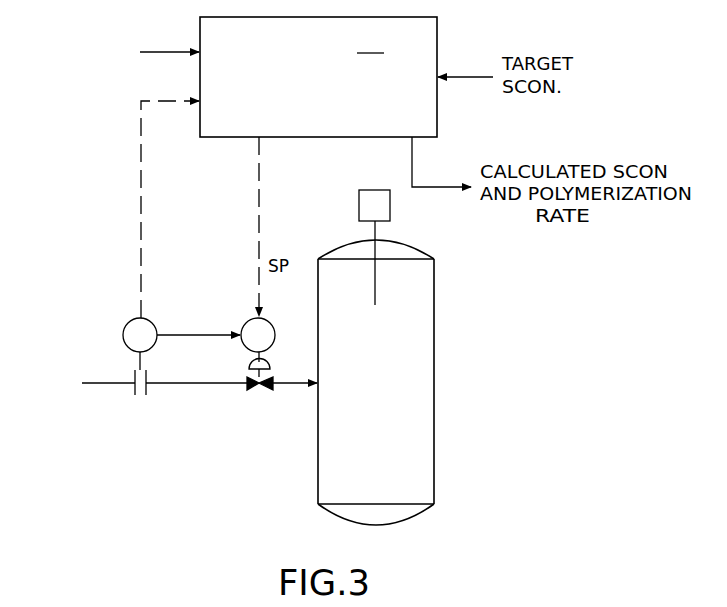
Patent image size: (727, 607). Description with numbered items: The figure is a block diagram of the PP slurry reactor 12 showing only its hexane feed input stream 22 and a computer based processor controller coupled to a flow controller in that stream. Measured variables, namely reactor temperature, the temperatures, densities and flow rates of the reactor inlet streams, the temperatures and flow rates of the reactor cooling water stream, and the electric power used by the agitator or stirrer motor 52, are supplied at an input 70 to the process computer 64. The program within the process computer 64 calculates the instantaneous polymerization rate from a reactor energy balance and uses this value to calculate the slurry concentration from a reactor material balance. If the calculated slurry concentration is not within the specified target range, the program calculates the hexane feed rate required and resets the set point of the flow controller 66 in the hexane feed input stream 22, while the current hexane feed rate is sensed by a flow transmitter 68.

The PP slurry reactor 12 is at (364, 446).
The hexane feed input stream 22 is at (112, 384).
The reactor agitator motor 52 is at (359, 203).
The process computer 64 is at (386, 90).
The flow controller 66 is at (268, 325).
The flow transmitter 68 is at (126, 325).
The input 70 is at (160, 51).